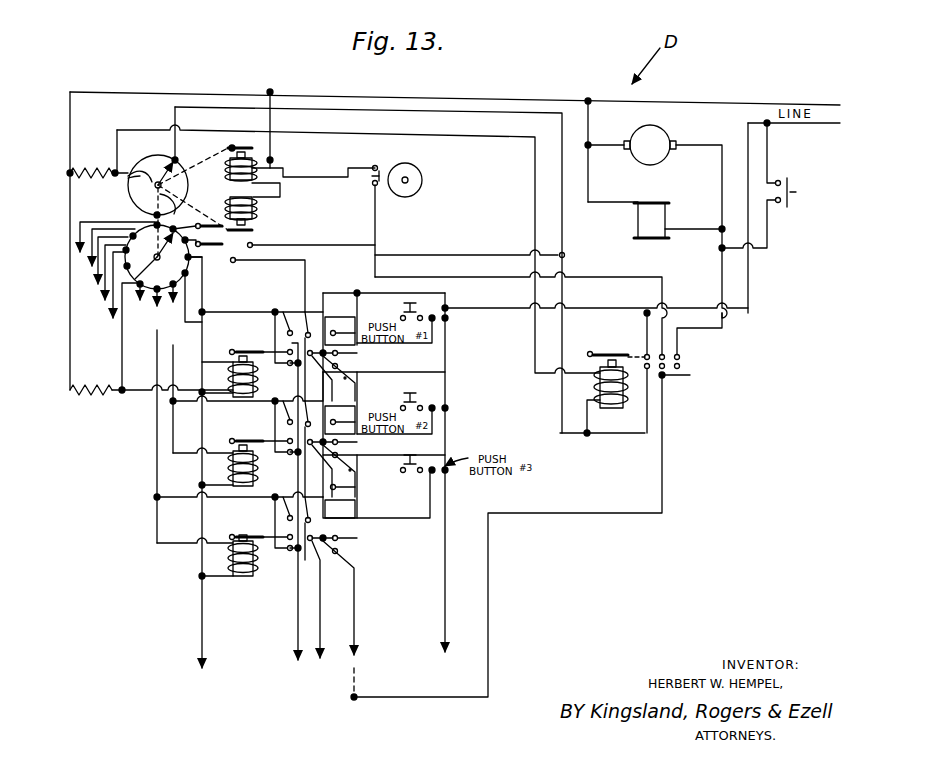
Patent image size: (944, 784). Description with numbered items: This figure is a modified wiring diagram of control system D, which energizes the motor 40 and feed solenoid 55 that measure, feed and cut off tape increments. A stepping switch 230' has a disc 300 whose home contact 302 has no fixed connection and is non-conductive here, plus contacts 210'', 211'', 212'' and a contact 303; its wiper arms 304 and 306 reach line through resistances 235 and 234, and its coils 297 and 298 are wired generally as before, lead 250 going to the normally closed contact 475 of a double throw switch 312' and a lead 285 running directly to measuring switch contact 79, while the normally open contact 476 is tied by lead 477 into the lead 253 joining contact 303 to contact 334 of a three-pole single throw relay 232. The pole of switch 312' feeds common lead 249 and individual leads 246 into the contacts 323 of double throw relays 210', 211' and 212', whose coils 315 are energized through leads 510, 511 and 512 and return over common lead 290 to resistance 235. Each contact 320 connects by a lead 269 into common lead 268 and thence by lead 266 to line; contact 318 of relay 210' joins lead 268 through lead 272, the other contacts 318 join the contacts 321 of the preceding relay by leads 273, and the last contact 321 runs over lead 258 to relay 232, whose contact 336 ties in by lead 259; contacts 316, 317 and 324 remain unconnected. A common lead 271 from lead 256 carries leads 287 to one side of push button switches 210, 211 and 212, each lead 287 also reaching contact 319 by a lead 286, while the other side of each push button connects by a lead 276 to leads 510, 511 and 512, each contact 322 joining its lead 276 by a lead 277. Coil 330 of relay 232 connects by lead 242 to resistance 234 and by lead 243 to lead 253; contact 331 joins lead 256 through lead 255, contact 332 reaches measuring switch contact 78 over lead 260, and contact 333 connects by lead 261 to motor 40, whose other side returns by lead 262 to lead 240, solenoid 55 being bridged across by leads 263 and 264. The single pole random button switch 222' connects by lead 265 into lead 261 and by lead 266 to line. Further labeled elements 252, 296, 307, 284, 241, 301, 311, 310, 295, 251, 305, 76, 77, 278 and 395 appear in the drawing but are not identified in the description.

The lead 240 is at (108, 92).
The conductor 252 is at (272, 120).
The lead 253 is at (375, 110).
The conductor 296 is at (300, 135).
The wiper arm 306 is at (170, 140).
The pointer arm 307 is at (158, 180).
The resistance 234 is at (88, 168).
The conductor 284 is at (120, 170).
The resistance 235 is at (95, 395).
The common lead 290 is at (112, 402).
The conductor 241 is at (135, 366).
The disc 300 is at (142, 425).
The lead 511 is at (176, 388).
The lead 512 is at (157, 432).
The home contact 302 is at (157, 206).
The contact 301 is at (122, 187).
The stepping switch 230' is at (99, 210).
The contact 303 is at (222, 145).
The contact 311 is at (226, 146).
The contact 310 is at (224, 198).
The relay 295 is at (230, 198).
The forward stepping coil 251 is at (300, 191).
The coil 297 is at (258, 224).
The coil 298 is at (272, 162).
The lead 285 is at (346, 158).
The normally closed contact 475 is at (262, 248).
The normally open contact 476 is at (282, 262).
The double throw switch 312' is at (268, 275).
The common lead 249 is at (302, 290).
The rotary selector switch 305 is at (135, 270).
The wiper arm 304 is at (156, 260).
The contact 210'' is at (201, 229).
The contact 211'' is at (210, 245).
The lead 510 is at (208, 262).
The contact 212'' is at (220, 293).
The measuring wheel cam 76 is at (410, 166).
The cam follower 77 is at (386, 170).
The switch blade 79 is at (386, 148).
The switch blade 78 is at (378, 192).
The lead 242 is at (535, 210).
The lead 477 is at (418, 252).
The lead 250 is at (446, 248).
The push button 210 is at (521, 308).
The common lead 268 is at (398, 278).
The lead 260 is at (470, 284).
The lead 276 is at (258, 302).
The contact 316 is at (283, 407).
The contact 317 is at (346, 426).
The double throw three-pole relay 210' is at (261, 345).
The lead 277 is at (272, 330).
The contact 319 is at (258, 372).
The contact 322 is at (287, 441).
The lead 246 is at (277, 501).
The contact 320 is at (344, 504).
The contact 321 is at (367, 459).
The lead 269 is at (355, 480).
The contact 323 is at (302, 485).
The contact 324 is at (362, 526).
The lead 273 is at (345, 378).
The coil 315 is at (215, 430).
The double throw three-pole relay 211' is at (259, 435).
The double throw three-pole relay 212' is at (256, 527).
The contact 278 is at (367, 479).
The lead 272 is at (357, 303).
The contact 318 is at (384, 405).
The lead 287 is at (450, 320).
The lead 286 is at (432, 343).
The common lead 271 is at (448, 380).
The push button 211 is at (445, 399).
The push button 212 is at (399, 450).
The lead 258 is at (490, 620).
The coil 330 is at (598, 380).
The contact 334 is at (585, 360).
The three-pole single throw relay 232 is at (628, 350).
The contact 331 is at (640, 340).
The contact 332 is at (665, 345).
The contact 333 is at (682, 355).
The contact 336 is at (682, 365).
The lead 259 is at (690, 375).
The conductor 395 is at (700, 328).
The lead 243 is at (590, 420).
The lead 255 is at (636, 315).
The lead 256 is at (568, 298).
The lead 261 is at (700, 140).
The motor 40 is at (660, 133).
The lead 262 is at (590, 112).
The feed solenoid 55 is at (660, 215).
The lead 264 is at (590, 200).
The lead 263 is at (674, 230).
The lead 266 is at (800, 124).
The single pole switch 222' is at (810, 185).
The lead 265 is at (770, 230).